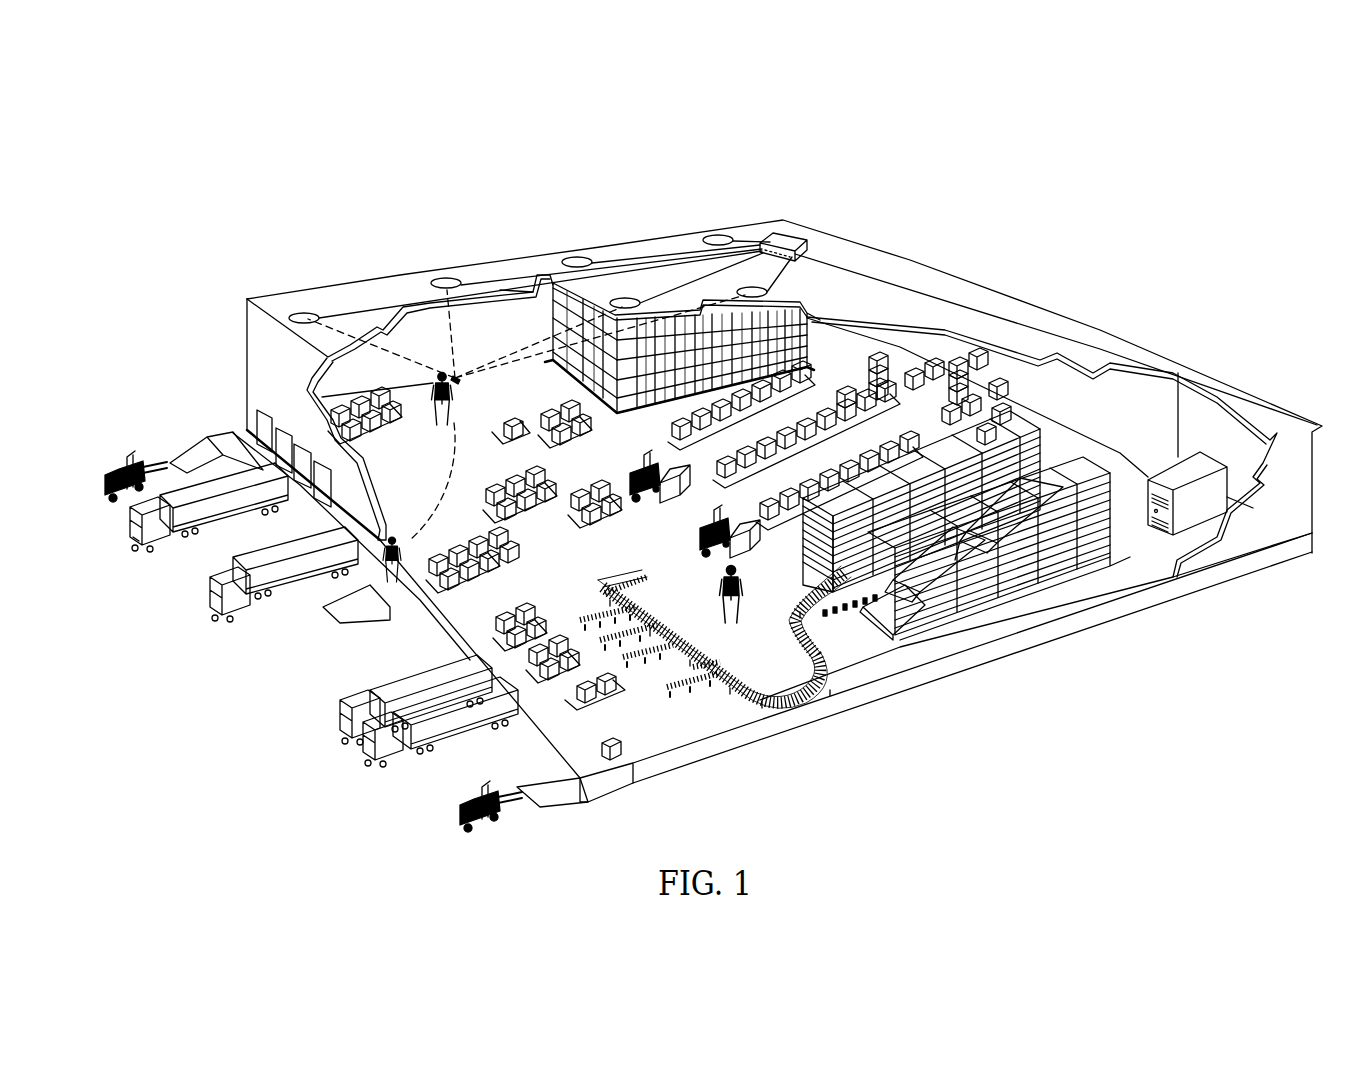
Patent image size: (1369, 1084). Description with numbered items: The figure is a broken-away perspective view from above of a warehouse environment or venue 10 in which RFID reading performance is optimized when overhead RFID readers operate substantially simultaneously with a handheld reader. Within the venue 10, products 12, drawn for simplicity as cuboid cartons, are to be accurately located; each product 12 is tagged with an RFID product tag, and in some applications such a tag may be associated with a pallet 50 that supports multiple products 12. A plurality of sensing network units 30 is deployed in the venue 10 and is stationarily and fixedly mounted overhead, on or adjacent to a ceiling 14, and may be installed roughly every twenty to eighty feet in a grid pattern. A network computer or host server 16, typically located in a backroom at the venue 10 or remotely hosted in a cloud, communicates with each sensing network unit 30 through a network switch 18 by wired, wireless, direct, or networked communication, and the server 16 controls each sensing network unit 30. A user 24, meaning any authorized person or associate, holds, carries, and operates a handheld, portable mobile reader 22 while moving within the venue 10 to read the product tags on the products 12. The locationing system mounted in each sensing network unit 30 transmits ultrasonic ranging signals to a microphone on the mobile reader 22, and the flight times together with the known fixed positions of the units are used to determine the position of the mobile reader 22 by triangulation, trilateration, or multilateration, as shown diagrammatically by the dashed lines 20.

The venue 10 is at (958, 265).
The products 12 is at (500, 434).
The ceiling 14 is at (832, 278).
The host server 16 is at (1212, 455).
The network switch 18 is at (785, 236).
The dashed lines 20 is at (385, 350).
The mobile reader 22 is at (459, 374).
The user 24 is at (446, 424).
The sensing network units 30 is at (750, 144).
The pallet 50 is at (504, 420).